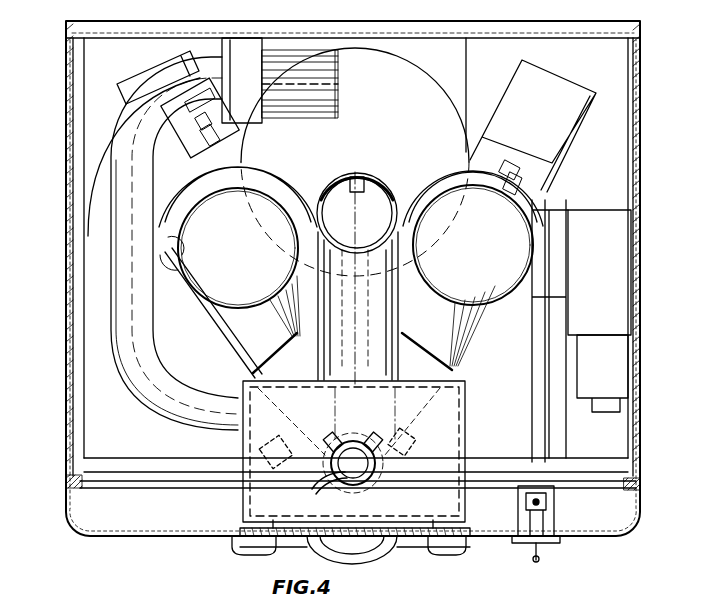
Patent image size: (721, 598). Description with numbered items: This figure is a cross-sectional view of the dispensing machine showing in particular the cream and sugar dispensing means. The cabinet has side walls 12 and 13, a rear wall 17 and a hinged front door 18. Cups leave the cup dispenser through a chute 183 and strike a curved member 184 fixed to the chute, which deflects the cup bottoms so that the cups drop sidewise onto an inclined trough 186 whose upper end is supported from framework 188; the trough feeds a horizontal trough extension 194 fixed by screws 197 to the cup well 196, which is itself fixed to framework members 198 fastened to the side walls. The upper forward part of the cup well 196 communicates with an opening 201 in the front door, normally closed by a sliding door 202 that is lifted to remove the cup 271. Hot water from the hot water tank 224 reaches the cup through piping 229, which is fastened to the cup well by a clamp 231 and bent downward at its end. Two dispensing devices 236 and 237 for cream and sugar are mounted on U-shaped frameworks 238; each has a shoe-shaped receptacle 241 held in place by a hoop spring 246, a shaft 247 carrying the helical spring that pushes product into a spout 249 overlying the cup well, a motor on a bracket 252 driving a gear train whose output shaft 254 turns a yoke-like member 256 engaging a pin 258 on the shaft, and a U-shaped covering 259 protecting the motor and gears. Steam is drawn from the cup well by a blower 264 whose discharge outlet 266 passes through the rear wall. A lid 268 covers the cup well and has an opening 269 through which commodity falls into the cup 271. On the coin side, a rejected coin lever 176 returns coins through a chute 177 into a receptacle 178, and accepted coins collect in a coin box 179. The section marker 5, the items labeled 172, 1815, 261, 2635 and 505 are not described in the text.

The side wall 12 is at (66, 374).
The side wall 13 is at (640, 358).
The rear wall 17 is at (485, 95).
The hinged front door 18 is at (138, 536).
The section line indicator 5 is at (544, 54).
The electronics module 172 is at (620, 316).
The rejected coin lever 176 is at (544, 556).
The chute 177 is at (540, 450).
The receptacle 178 is at (558, 522).
The coin box 179 is at (613, 386).
The chute 183 is at (396, 186).
The curved member 184 is at (360, 178).
The inclined trough 186 is at (390, 304).
The framework 188 is at (428, 136).
The rotary path 1815 is at (397, 76).
The horizontal trough extension 194 is at (398, 442).
The cup well 196 is at (466, 432).
The screws 197 is at (444, 418).
The framework members 198 is at (103, 460).
The opening 201 is at (256, 547).
The sliding door 202 is at (376, 552).
The hot water tank 224 is at (86, 252).
The piping 229 is at (193, 303).
The clamp 231 is at (245, 447).
The dispensing device 236 is at (508, 316).
The dispensing device 237 is at (206, 336).
The U-shaped framework 238 is at (228, 162).
The shoe-shaped receptacle 241 is at (428, 304).
The hoop spring 246 is at (192, 190).
The shaft 247 is at (540, 186).
The spout 249 is at (318, 368).
The bracket 252 is at (210, 88).
The output shaft 254 is at (172, 132).
The yoke-like member 256 is at (222, 165).
The pin 258 is at (228, 150).
The U-shaped covering 259 is at (147, 78).
The drum 261 is at (254, 254).
The blower 264 is at (338, 118).
The discharge outlet 266 is at (245, 80).
The lid 268 is at (240, 510).
The opening 269 is at (340, 489).
The cup 271 is at (378, 464).
The duct wall 2635 is at (158, 398).
The housing curve 505 is at (110, 197).